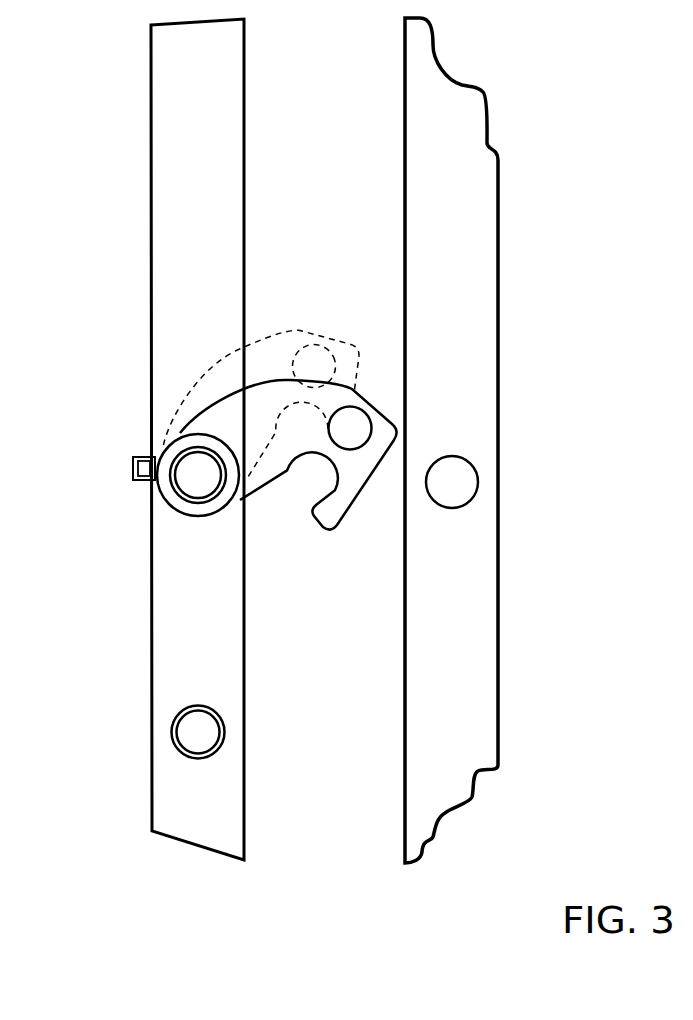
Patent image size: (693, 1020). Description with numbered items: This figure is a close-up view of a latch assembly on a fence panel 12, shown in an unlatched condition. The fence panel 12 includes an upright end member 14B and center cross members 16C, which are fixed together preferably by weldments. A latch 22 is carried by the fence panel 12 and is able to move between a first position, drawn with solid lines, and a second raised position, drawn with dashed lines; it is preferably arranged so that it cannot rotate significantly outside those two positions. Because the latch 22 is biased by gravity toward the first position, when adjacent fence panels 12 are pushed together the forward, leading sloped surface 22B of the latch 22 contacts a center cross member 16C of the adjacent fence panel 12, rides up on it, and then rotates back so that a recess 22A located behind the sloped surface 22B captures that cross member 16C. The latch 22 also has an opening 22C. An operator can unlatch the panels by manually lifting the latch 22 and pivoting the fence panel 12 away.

The fence panel 12 is at (378, 440).
The upright end member 14B is at (220, 650).
The center cross member 16C is at (175, 490).
The latch 22 is at (357, 425).
The recess 22A is at (302, 496).
The sloped surface 22B is at (363, 490).
The latch hole 22C is at (366, 420).